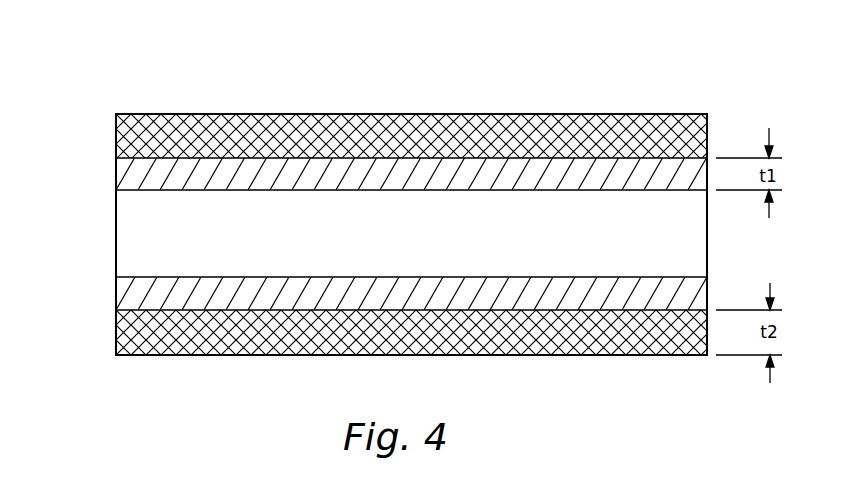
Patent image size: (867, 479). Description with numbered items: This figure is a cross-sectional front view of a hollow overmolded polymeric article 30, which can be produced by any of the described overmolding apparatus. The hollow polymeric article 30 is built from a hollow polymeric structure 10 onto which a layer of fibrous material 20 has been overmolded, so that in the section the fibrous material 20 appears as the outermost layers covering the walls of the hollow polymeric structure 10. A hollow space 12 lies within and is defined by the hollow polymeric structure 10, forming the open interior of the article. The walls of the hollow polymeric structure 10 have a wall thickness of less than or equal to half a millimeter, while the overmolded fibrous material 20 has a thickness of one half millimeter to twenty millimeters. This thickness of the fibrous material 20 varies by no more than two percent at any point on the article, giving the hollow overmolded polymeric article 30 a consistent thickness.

The hollow polymeric structure 10 is at (42, 158).
The hollow space 12 is at (352, 237).
The layer of fibrous material 20 is at (255, 128).
The hollow overmolded polymeric article 30 is at (572, 108).